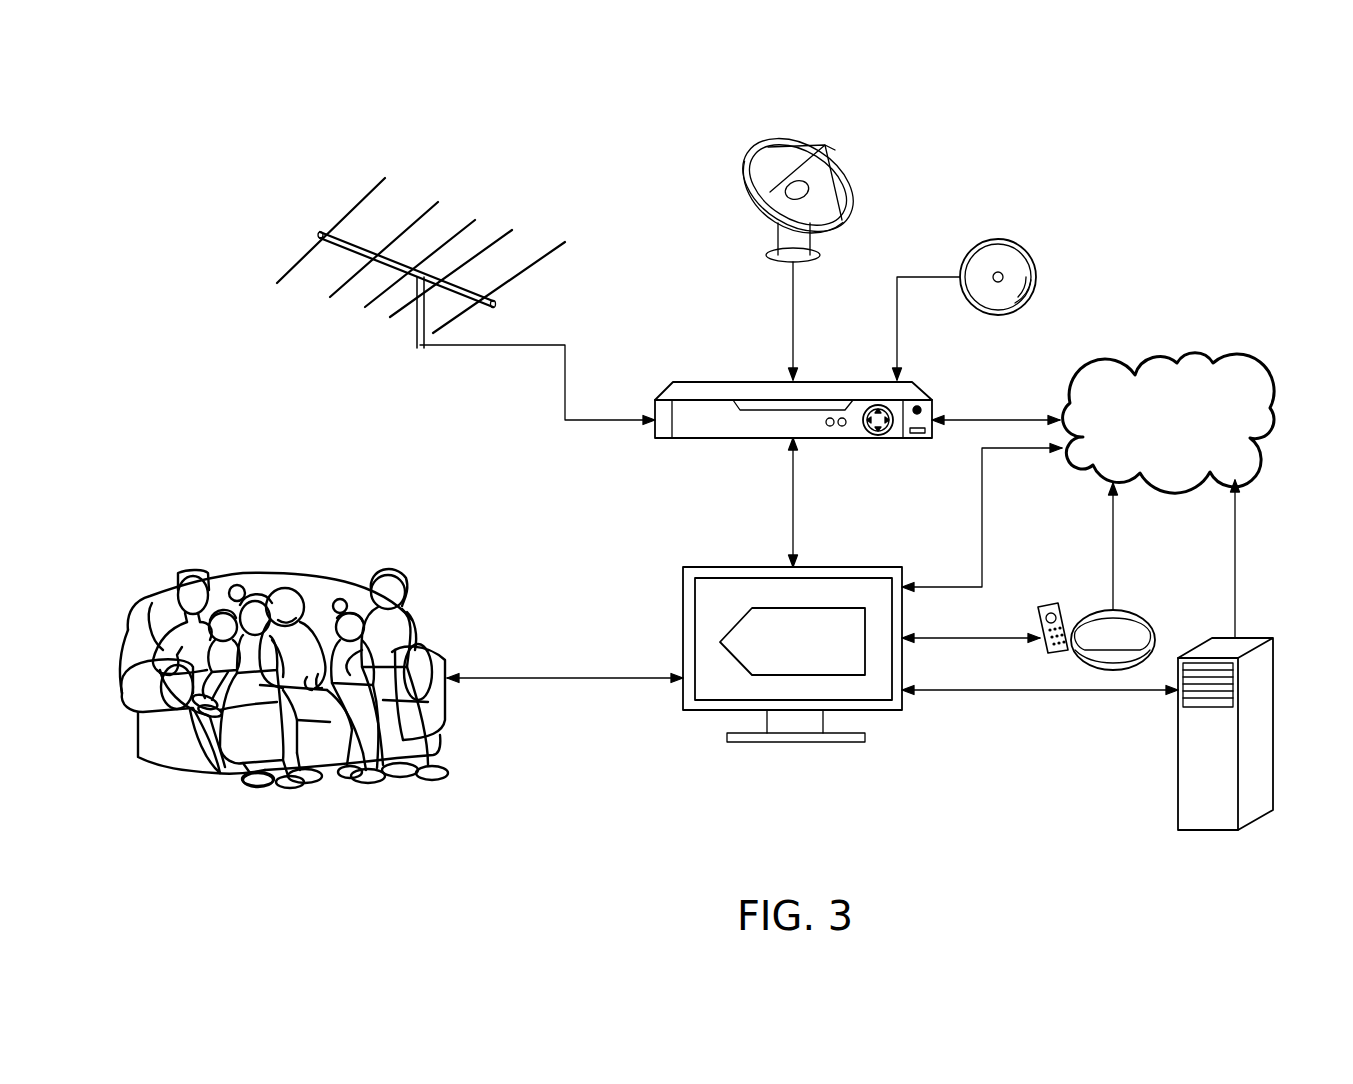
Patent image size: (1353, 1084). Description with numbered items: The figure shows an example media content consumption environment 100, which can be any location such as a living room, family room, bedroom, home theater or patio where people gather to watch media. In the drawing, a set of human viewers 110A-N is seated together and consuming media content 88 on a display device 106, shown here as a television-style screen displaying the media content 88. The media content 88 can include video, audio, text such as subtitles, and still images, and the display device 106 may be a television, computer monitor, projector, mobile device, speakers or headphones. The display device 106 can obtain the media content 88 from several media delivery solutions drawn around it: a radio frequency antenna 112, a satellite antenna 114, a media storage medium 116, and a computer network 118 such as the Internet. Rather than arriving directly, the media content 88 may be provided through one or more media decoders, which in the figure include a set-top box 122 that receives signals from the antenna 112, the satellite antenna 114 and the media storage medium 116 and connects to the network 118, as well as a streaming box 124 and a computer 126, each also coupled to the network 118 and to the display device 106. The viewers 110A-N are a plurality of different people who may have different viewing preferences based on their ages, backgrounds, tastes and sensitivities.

The media content consumption environment 100 is at (180, 160).
The radio frequency (RF) antenna 112 is at (362, 198).
The satellite antenna 114 is at (760, 145).
The media storage medium 116 is at (1002, 238).
The set-top box 122 is at (704, 370).
The computer network 118 is at (1155, 452).
The display device 106 is at (683, 638).
The media content 88 is at (808, 608).
The set of human viewers 110A-N is at (260, 573).
The streaming box 124 is at (1090, 610).
The computer 126 is at (1178, 760).